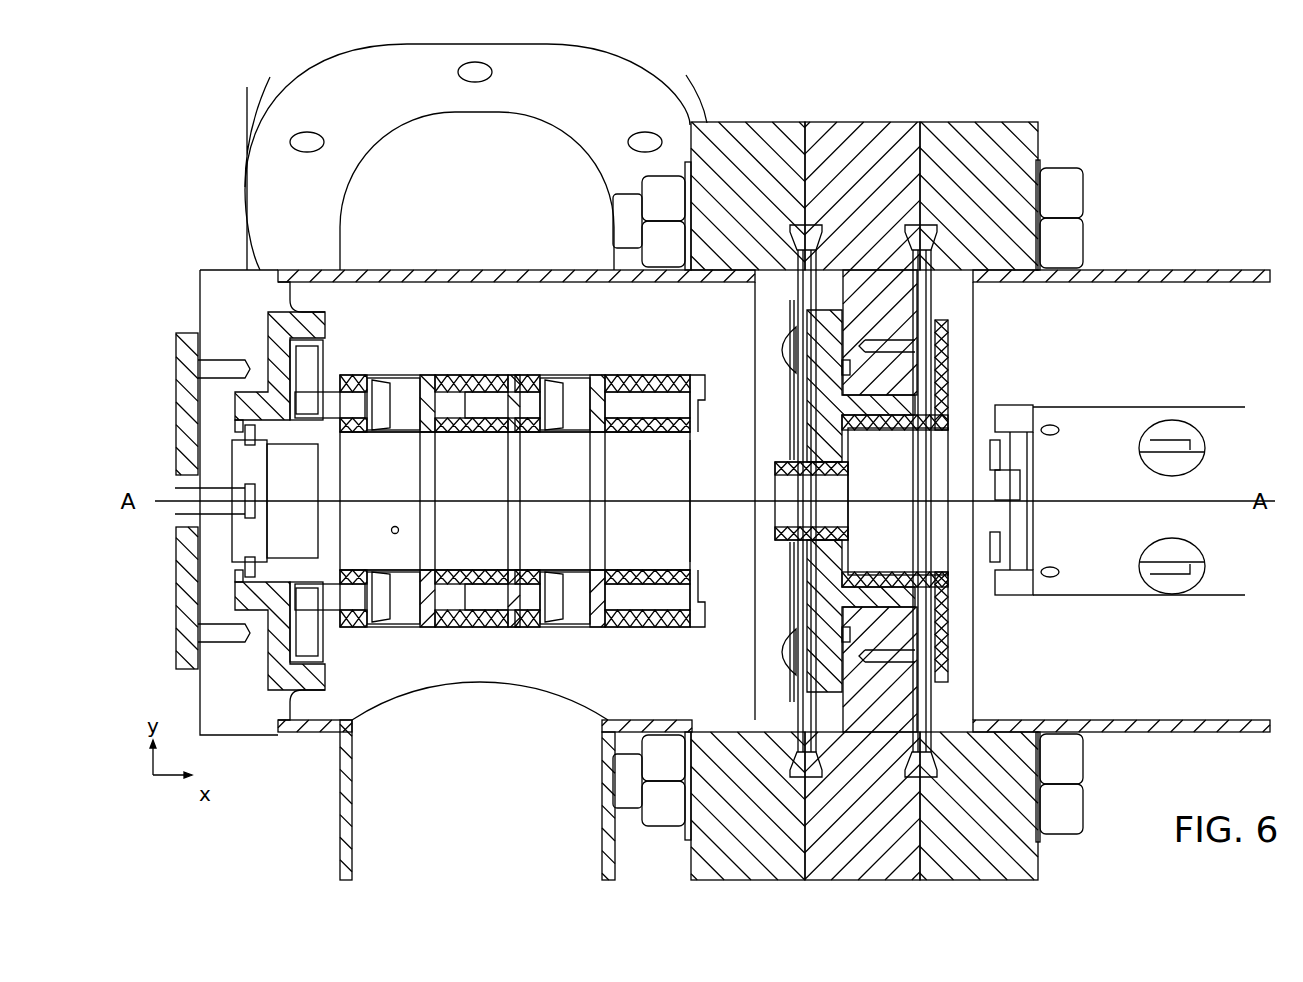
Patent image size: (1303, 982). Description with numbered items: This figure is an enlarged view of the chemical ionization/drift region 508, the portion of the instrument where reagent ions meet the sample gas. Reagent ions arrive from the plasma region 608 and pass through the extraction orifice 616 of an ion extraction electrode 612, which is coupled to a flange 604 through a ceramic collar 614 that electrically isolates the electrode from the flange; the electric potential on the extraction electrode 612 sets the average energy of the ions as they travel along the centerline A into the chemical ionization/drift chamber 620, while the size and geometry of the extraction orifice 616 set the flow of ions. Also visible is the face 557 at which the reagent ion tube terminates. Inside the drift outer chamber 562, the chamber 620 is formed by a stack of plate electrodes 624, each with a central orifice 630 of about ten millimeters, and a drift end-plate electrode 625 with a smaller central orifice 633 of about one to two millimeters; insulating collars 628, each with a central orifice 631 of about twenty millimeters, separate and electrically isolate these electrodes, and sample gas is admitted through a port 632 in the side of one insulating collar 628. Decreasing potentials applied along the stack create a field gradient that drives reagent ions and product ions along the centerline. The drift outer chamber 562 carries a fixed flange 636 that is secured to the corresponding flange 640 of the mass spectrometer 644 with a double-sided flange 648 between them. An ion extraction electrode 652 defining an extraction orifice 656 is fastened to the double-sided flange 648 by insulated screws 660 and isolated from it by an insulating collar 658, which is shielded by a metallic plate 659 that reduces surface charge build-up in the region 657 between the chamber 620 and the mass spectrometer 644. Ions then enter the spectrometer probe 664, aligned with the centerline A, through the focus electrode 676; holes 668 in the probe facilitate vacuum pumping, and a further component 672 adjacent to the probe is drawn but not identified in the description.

The chemical ionization/drift region 508 is at (190, 207).
The flange 604 is at (212, 306).
The ceramic collar 614 is at (312, 322).
The ion extraction electrode 612 is at (312, 357).
The drift end-plate electrode 625 is at (698, 372).
The fixed flange 636 is at (760, 140).
The double-sided flange 648 is at (876, 135).
The flange 640 is at (988, 138).
The mass spectrometer 644 is at (1215, 290).
The insulated screws 660 is at (962, 345).
The ion extraction electrode 652 is at (955, 383).
The spectrometer probe 664 is at (1131, 386).
The insulating collar 658 is at (822, 404).
The metallic plate 659 is at (797, 433).
The focus electrode 676 is at (993, 455).
The extraction orifice 656 is at (825, 508).
The face 557 is at (245, 492).
The plasma region 608 is at (190, 503).
The extraction orifice 616 is at (254, 505).
The plate electrodes 624 is at (356, 432).
The central orifice 630 is at (424, 452).
The central orifice 631 is at (648, 432).
The central orifice 633 is at (690, 505).
The chemical ionization/drift chamber 620 is at (360, 527).
The port 632 is at (392, 533).
The region 657 is at (702, 549).
The insulating collars 628 is at (378, 628).
The drift outer chamber 562 is at (683, 692).
The coupling plate 672 is at (1107, 565).
The holes 668 is at (1172, 596).